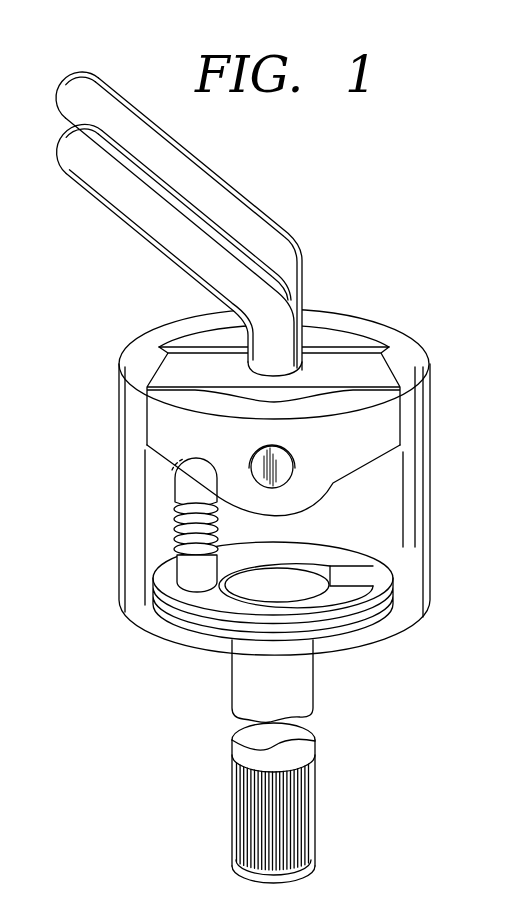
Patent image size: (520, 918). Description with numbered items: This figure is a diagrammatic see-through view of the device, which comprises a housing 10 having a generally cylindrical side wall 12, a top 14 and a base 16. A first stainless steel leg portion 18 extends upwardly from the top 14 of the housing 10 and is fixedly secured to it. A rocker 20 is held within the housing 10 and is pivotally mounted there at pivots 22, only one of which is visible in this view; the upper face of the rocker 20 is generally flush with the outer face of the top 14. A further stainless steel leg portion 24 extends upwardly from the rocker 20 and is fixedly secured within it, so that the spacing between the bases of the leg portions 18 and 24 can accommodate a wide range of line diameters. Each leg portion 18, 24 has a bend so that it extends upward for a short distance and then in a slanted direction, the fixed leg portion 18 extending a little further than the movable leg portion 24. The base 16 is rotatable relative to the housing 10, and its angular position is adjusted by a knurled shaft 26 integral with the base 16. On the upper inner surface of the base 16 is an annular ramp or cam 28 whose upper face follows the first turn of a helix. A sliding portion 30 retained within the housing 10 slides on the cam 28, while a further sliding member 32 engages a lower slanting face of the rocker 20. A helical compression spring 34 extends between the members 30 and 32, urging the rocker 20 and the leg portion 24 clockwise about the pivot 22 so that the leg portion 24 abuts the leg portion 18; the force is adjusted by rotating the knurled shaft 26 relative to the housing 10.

The housing 10 is at (420, 491).
The cylindrical side wall 12 is at (422, 398).
The top 14 is at (337, 333).
The base 16 is at (373, 620).
The first stainless steel leg portion 18 is at (222, 192).
The rocker 20 is at (377, 380).
The pivots 22 is at (282, 470).
The further stainless steel leg portion 24 is at (147, 215).
The knurled shaft 26 is at (297, 815).
The annular ramp or cam 28 is at (212, 602).
The sliding portion 30 is at (190, 567).
The sliding member 32 is at (185, 487).
The helical compression spring 34 is at (180, 528).